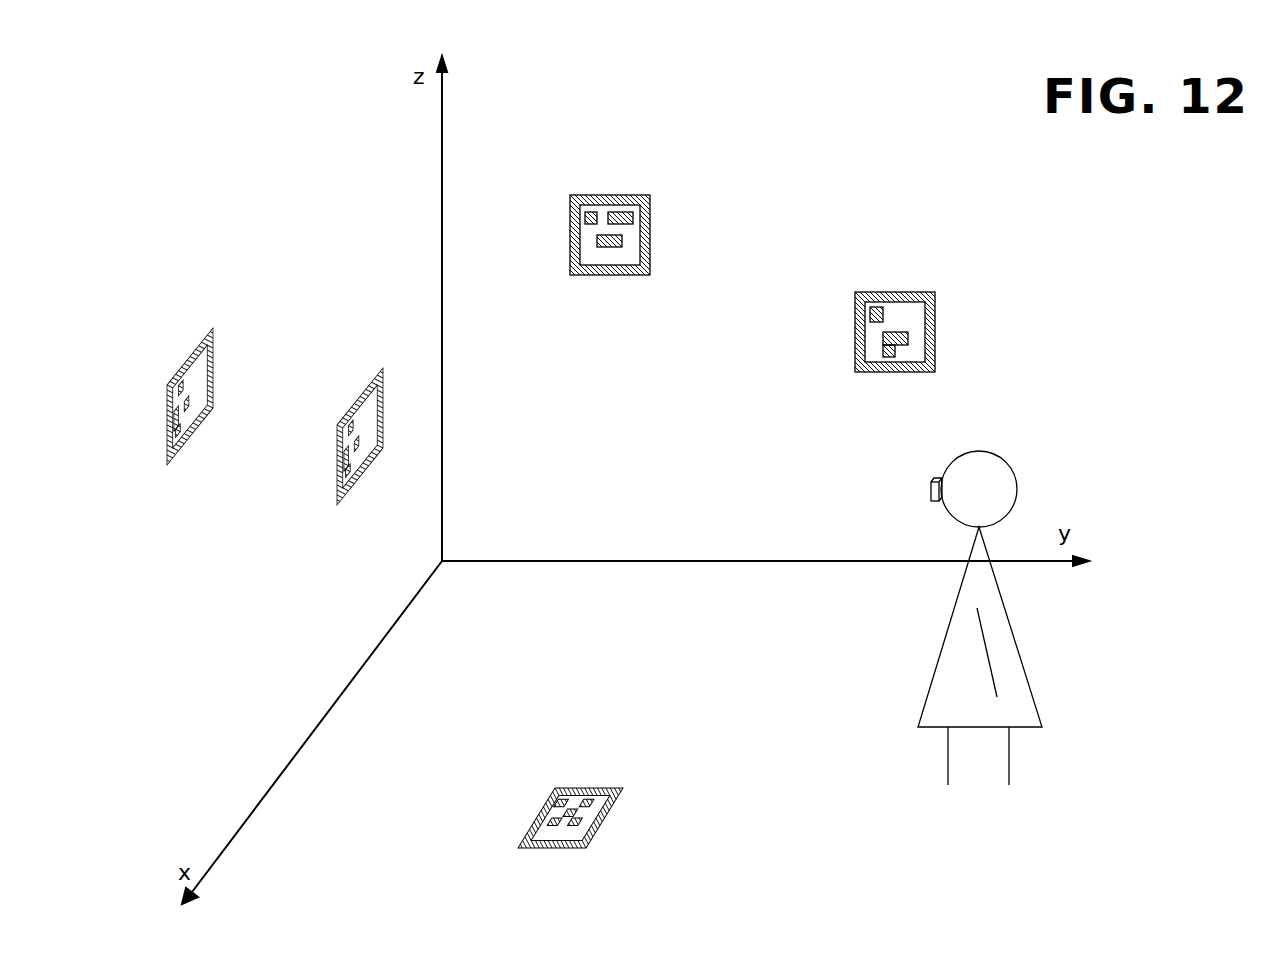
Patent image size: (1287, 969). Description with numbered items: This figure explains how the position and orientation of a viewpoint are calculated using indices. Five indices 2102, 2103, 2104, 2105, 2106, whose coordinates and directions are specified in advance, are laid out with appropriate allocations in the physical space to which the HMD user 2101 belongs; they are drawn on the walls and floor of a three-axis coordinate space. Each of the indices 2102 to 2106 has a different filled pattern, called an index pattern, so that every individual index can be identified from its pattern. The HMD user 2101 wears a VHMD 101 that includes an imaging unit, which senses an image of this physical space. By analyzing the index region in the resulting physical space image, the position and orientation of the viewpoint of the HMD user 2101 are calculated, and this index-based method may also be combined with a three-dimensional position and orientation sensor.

The VHMD 101 is at (930, 481).
The HMD user 2101 is at (920, 689).
The index 2102 is at (606, 790).
The index 2103 is at (203, 340).
The index 2104 is at (375, 380).
The index 2105 is at (918, 292).
The index 2106 is at (629, 195).